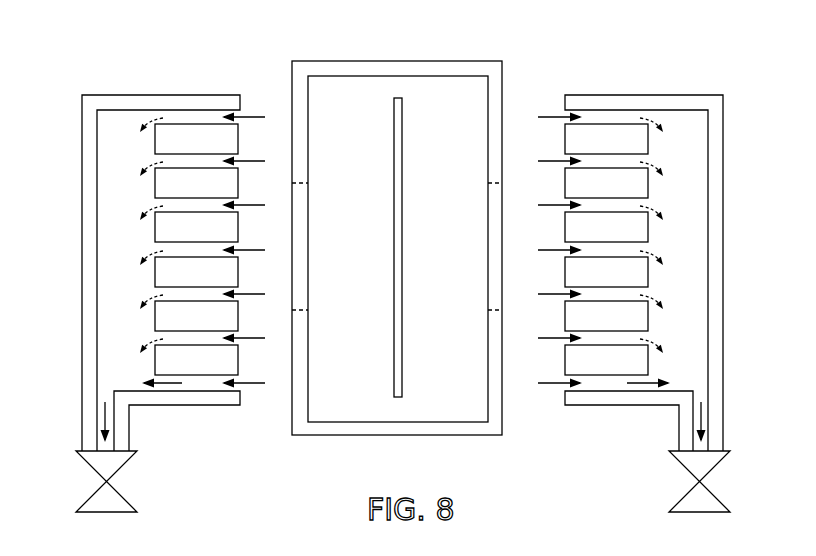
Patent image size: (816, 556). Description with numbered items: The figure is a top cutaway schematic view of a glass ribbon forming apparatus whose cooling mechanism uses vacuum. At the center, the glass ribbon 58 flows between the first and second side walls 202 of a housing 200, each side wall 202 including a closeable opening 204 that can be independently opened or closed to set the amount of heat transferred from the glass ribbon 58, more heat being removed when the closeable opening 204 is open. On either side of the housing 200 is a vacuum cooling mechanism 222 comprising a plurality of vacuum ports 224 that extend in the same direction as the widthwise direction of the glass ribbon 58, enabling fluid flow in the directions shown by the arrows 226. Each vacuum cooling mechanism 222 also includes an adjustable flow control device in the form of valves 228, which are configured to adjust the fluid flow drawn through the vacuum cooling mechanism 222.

The housing 200 is at (518, 60).
The first and second side walls 202 is at (292, 407).
The closeable opening 204 is at (308, 246).
The glass ribbon 58 is at (403, 197).
The vacuum cooling mechanism 222 is at (82, 236).
The vacuum ports 224 is at (188, 115).
The arrows 226 is at (146, 117).
The valves 228 is at (118, 466).